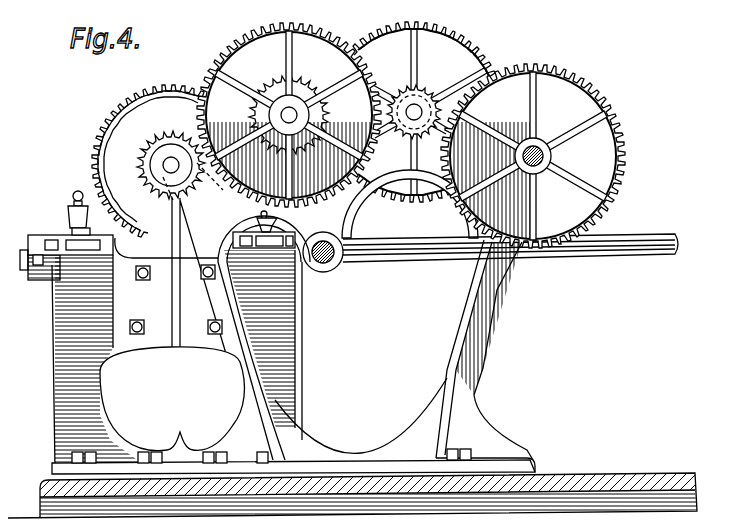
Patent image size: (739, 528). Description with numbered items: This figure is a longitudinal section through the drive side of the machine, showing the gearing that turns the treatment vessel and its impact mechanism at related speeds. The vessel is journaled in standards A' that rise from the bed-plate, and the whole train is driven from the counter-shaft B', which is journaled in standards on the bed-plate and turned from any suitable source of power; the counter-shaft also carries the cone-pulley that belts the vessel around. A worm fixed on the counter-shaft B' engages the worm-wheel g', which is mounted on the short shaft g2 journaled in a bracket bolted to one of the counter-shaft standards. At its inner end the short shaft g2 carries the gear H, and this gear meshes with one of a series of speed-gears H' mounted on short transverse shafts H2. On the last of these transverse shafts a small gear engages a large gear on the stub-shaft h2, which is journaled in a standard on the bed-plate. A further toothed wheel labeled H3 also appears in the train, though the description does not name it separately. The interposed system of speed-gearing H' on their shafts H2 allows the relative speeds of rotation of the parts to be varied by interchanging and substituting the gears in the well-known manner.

The speed-gears H' is at (282, 115).
The short transverse shafts H2 is at (291, 110).
The pinion gear H3 is at (412, 104).
The gear H is at (355, 136).
The worm-wheel g' is at (132, 161).
The short shaft g2 is at (165, 167).
The stub-shaft h2 is at (334, 260).
The counter-shaft B' is at (510, 233).
The standards A' is at (352, 483).